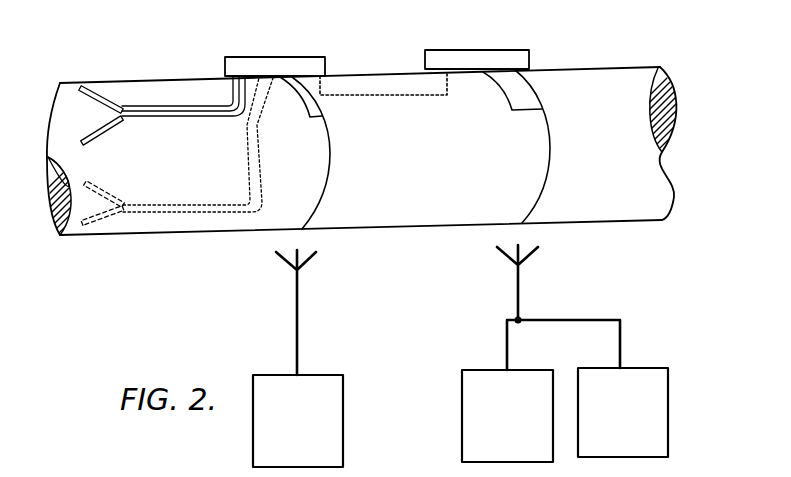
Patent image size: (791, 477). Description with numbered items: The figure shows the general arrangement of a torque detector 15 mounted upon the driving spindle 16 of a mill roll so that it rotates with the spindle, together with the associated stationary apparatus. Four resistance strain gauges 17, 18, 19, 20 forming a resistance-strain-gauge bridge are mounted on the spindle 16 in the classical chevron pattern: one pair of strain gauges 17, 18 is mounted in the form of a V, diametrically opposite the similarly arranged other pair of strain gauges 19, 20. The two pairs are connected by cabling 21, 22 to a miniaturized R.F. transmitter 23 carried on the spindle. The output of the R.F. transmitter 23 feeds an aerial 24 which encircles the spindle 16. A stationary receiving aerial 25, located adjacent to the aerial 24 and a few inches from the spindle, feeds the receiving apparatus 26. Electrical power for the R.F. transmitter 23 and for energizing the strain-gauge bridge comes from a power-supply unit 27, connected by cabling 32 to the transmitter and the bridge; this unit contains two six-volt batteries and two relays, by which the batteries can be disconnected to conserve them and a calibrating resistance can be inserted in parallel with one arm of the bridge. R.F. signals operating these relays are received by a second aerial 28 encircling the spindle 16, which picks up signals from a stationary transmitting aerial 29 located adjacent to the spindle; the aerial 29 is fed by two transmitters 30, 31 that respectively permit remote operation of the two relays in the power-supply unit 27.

The torque detector 15 is at (336, 61).
The spindle 16 is at (613, 145).
The resistance strain gauge 17 is at (96, 131).
The resistance strain gauge 18 is at (83, 87).
The resistance strain gauge 19 is at (100, 226).
The resistance strain gauge 20 is at (107, 192).
The cabling 21 is at (174, 121).
The cabling 22 is at (212, 197).
The R.F. transmitter 23 is at (257, 63).
The aerial 24 is at (330, 174).
The receiving aerial 25 is at (300, 290).
The receiving apparatus 26 is at (303, 428).
The power-supply unit 27 is at (529, 57).
The aerial 28 is at (550, 170).
The transmitting aerial 29 is at (517, 300).
The transmitter 30 is at (514, 423).
The transmitter 31 is at (627, 421).
The cabling 32 is at (380, 96).